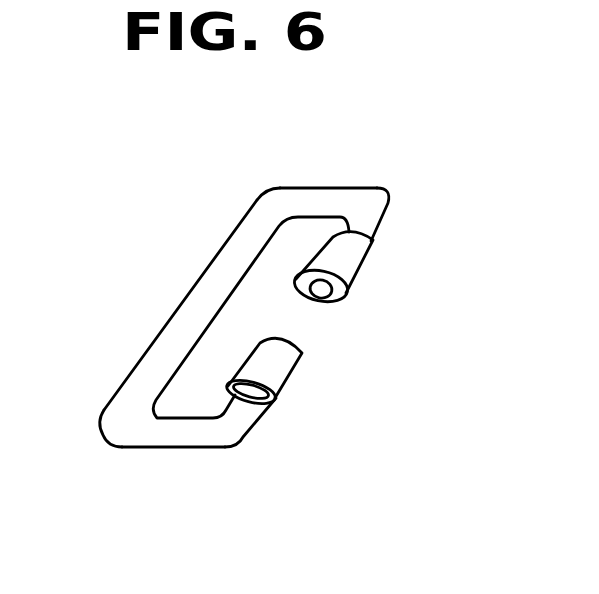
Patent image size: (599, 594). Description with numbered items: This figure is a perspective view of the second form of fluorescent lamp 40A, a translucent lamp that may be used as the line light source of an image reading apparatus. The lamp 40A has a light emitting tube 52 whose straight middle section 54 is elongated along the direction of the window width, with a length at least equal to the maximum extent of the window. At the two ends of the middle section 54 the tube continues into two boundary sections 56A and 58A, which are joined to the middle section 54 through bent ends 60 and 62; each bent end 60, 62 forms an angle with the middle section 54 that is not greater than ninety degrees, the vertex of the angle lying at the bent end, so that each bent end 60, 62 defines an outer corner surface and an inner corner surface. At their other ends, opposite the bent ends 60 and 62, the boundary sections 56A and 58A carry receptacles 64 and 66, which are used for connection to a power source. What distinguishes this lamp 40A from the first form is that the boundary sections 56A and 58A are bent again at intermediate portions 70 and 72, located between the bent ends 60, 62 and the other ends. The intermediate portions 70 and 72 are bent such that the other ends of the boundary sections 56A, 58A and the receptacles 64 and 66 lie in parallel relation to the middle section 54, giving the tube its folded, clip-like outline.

The fluorescent lamp 40A is at (177, 240).
The light emitting tube 52 is at (167, 320).
The middle section 54 is at (232, 306).
The boundary section 56A is at (163, 448).
The boundary section 58A is at (337, 187).
The bent end 60 is at (100, 441).
The bent end 62 is at (292, 187).
The receptacle 64 is at (290, 377).
The receptacle 66 is at (357, 277).
The intermediate portion 70 is at (238, 440).
The intermediate portion 72 is at (377, 188).